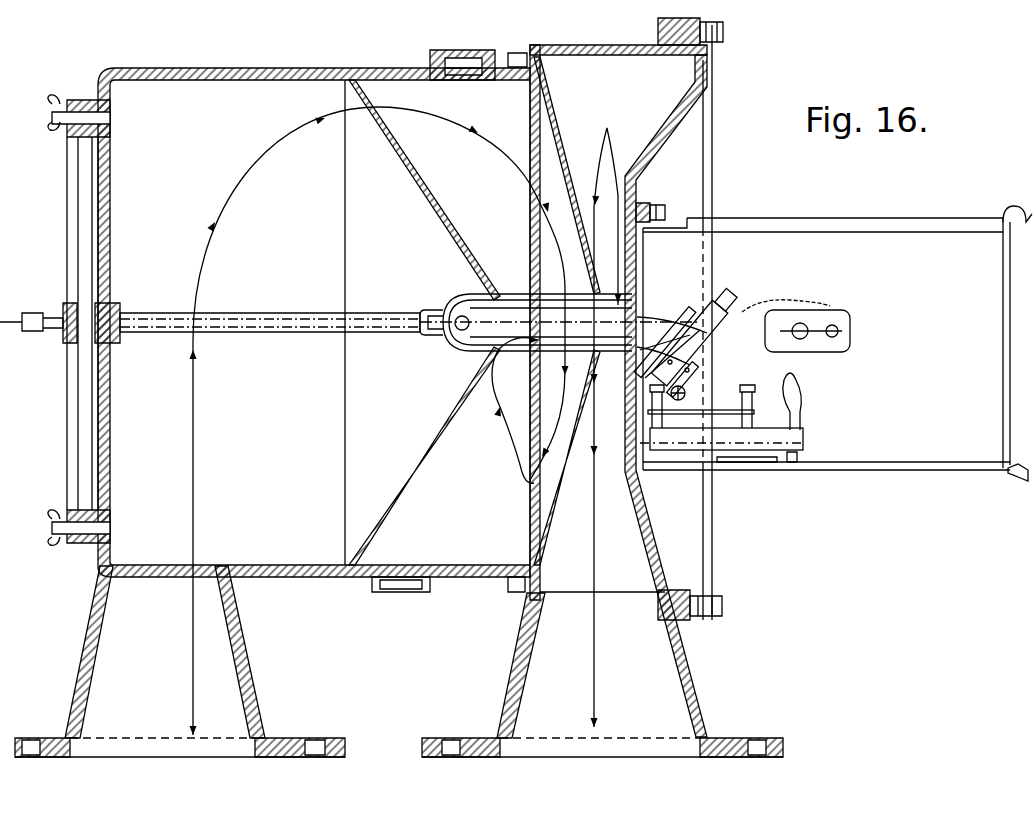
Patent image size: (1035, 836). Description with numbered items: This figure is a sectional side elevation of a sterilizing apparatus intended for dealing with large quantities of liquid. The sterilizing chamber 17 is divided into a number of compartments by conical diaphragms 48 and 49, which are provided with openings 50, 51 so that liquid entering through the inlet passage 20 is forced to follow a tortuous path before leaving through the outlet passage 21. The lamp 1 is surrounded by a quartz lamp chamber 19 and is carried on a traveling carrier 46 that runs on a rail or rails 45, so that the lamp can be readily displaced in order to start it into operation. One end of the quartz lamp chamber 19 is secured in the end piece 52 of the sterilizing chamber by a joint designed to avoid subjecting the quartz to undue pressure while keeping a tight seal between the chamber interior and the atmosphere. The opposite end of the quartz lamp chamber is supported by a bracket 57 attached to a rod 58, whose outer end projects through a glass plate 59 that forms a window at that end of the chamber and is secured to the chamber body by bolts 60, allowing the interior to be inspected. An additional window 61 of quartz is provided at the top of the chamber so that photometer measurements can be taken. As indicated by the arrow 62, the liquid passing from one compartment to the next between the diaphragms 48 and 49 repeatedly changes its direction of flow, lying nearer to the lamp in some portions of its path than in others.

The lamp 1 is at (498, 300).
The sterilizing chamber 17 is at (236, 78).
The quartz lamp chamber 19 is at (520, 352).
The inlet passage 20 is at (399, 661).
The outlet passage 21 is at (606, 427).
The rail 45 is at (937, 447).
The traveling carrier 46 is at (748, 437).
The conical diaphragm 48 is at (414, 170).
The conical diaphragm 49 is at (545, 101).
The opening 50 is at (377, 128).
The opening 51 is at (578, 290).
The end piece 52 is at (648, 154).
The bracket 57 is at (532, 316).
The rod 58 is at (247, 316).
The glass plate 59 is at (75, 397).
The bolts 60 is at (55, 537).
The window 61 is at (462, 56).
The arrow 62 is at (196, 382).